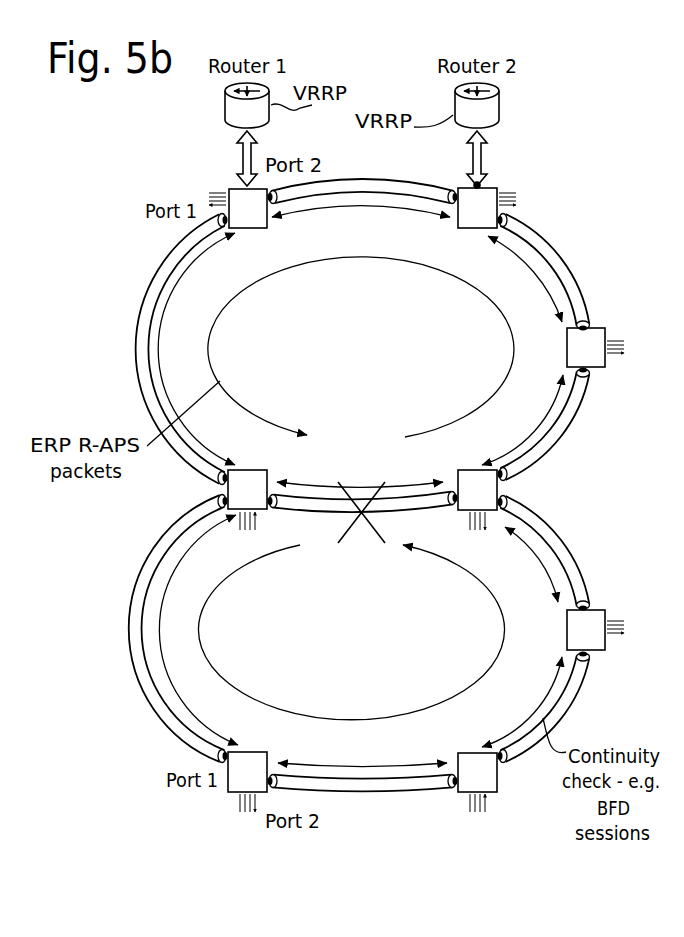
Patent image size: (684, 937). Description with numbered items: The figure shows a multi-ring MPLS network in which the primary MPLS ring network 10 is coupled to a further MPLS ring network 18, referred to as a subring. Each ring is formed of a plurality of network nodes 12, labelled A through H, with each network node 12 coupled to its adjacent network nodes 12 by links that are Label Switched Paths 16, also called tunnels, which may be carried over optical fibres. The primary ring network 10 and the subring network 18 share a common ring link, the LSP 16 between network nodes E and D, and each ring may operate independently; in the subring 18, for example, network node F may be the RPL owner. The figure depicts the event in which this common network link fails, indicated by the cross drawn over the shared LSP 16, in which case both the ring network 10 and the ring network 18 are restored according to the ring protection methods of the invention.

The MPLS ring network 10 is at (117, 199).
The network node 12 is at (230, 189).
The Label Switched Path 16 is at (383, 178).
The further MPLS ring network 18 is at (150, 811).